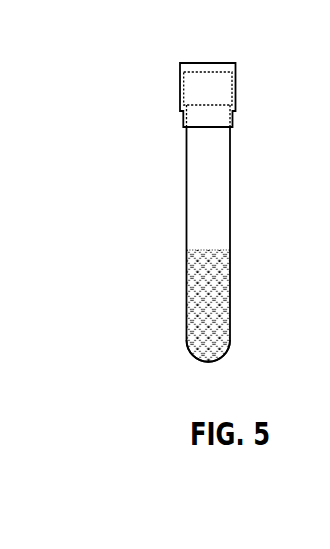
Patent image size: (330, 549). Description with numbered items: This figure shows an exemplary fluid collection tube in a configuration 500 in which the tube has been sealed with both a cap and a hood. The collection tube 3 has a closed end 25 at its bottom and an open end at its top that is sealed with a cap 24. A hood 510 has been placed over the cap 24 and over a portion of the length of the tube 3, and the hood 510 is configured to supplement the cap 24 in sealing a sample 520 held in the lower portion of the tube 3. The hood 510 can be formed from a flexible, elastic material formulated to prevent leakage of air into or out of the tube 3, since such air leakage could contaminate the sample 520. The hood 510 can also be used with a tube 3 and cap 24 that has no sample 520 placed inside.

The configuration 500 is at (166, 44).
The hood 510 is at (237, 74).
The cap 24 is at (222, 100).
The collection tube 3 is at (230, 158).
The sample 520 is at (222, 272).
The closed end 25 is at (222, 357).